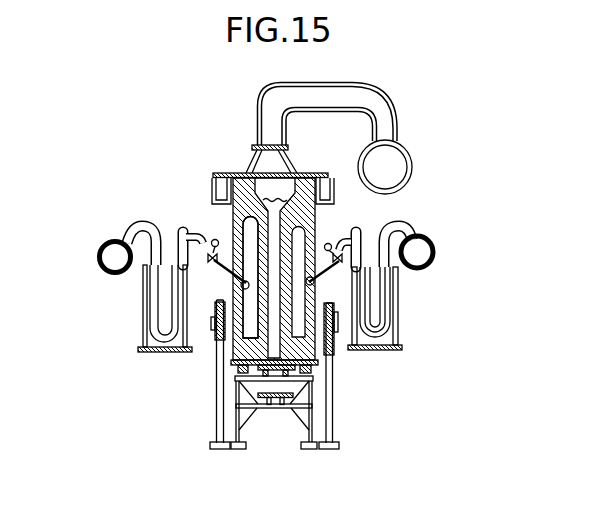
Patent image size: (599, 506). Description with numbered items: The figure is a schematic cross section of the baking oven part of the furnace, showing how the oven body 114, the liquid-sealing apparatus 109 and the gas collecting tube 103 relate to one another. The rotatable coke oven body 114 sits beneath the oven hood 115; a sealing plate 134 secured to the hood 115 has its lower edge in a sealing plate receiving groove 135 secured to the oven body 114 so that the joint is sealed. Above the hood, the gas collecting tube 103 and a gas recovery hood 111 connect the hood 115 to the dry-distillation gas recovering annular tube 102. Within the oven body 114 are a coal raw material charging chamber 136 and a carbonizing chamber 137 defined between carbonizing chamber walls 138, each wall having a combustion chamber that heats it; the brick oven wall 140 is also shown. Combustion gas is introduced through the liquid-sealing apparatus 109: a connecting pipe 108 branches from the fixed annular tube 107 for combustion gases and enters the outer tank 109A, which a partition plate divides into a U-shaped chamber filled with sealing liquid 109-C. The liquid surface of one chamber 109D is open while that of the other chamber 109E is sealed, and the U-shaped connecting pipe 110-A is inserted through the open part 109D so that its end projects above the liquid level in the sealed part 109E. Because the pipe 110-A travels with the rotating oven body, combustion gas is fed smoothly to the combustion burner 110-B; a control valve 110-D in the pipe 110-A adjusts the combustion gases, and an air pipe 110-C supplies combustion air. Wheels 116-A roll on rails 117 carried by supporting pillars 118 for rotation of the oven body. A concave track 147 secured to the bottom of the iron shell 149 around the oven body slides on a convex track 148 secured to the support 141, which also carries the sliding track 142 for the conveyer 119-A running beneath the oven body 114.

The dry-distillation gas recovering annular tube 102 is at (411, 167).
The gas collecting tube 103 is at (388, 87).
The annular tube for combustion gases 107 is at (104, 258).
The connecting pipe 108 is at (135, 231).
The liquid-sealing apparatus 109 is at (134, 340).
The outer tank 109A is at (143, 318).
The sealing liquid 109-C is at (173, 347).
The open chamber 109D is at (382, 276).
The sealed chamber 109E is at (150, 282).
The connecting pipe 110-A is at (178, 228).
The combustion burner 110-B is at (238, 284).
The air pipe 110-C is at (349, 262).
The control valve 110-D is at (213, 239).
The gas recovery hood 111 is at (253, 148).
The coke oven body 114 is at (357, 212).
The oven hood 115 is at (313, 172).
The wheel 116-A is at (352, 350).
The rail 117 is at (331, 358).
The supporting pillar 118 is at (332, 408).
The conveyer 119-A is at (278, 402).
The sealing plate 134 is at (220, 180).
The sealing plate receiving groove 135 is at (210, 196).
The coal raw material charging chamber 136 is at (275, 194).
The carbonizing chamber 137 is at (214, 325).
The carbonizing chamber wall 138 is at (262, 256).
The brick oven wall 140 is at (219, 305).
The support 141 is at (336, 441).
The sliding track 142 is at (262, 398).
The concave track 147 is at (283, 322).
The convex track 148 is at (236, 379).
The iron shell 149 is at (357, 228).